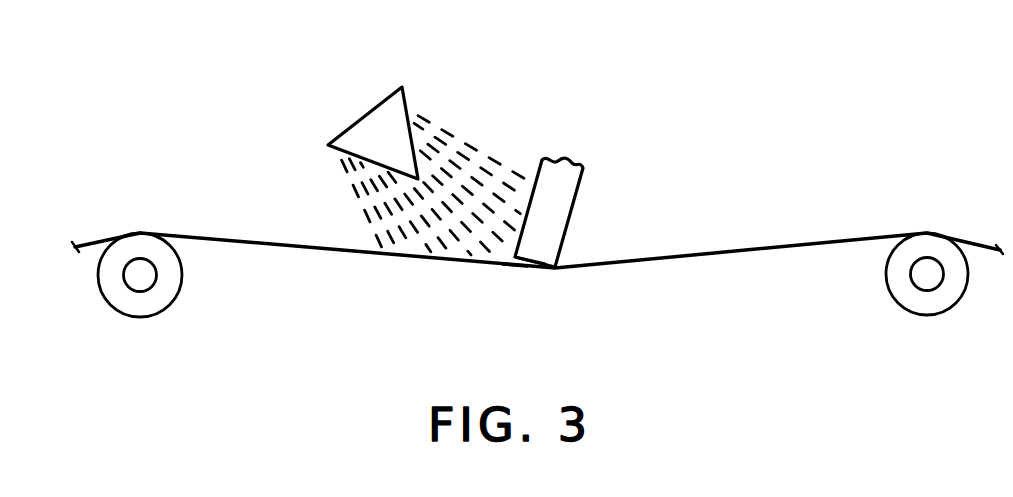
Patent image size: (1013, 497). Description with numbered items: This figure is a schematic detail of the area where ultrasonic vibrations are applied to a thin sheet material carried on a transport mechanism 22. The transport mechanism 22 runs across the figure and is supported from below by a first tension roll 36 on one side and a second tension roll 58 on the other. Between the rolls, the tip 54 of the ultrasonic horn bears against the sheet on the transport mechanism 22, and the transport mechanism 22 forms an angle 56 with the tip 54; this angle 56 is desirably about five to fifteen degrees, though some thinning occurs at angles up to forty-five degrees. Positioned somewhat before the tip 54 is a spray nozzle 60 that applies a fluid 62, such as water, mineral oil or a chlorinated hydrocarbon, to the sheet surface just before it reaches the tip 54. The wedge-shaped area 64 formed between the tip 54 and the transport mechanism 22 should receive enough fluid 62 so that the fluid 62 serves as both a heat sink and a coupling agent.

The transport mechanism 22 is at (190, 236).
The first tension roll 36 is at (178, 291).
The tip of the ultrasonic horn 54 is at (576, 195).
The angle 56 is at (514, 266).
The second tension roll 58 is at (967, 271).
The spray nozzle 60 is at (406, 96).
The fluid 62 is at (467, 146).
The wedge-shaped area 64 is at (526, 269).